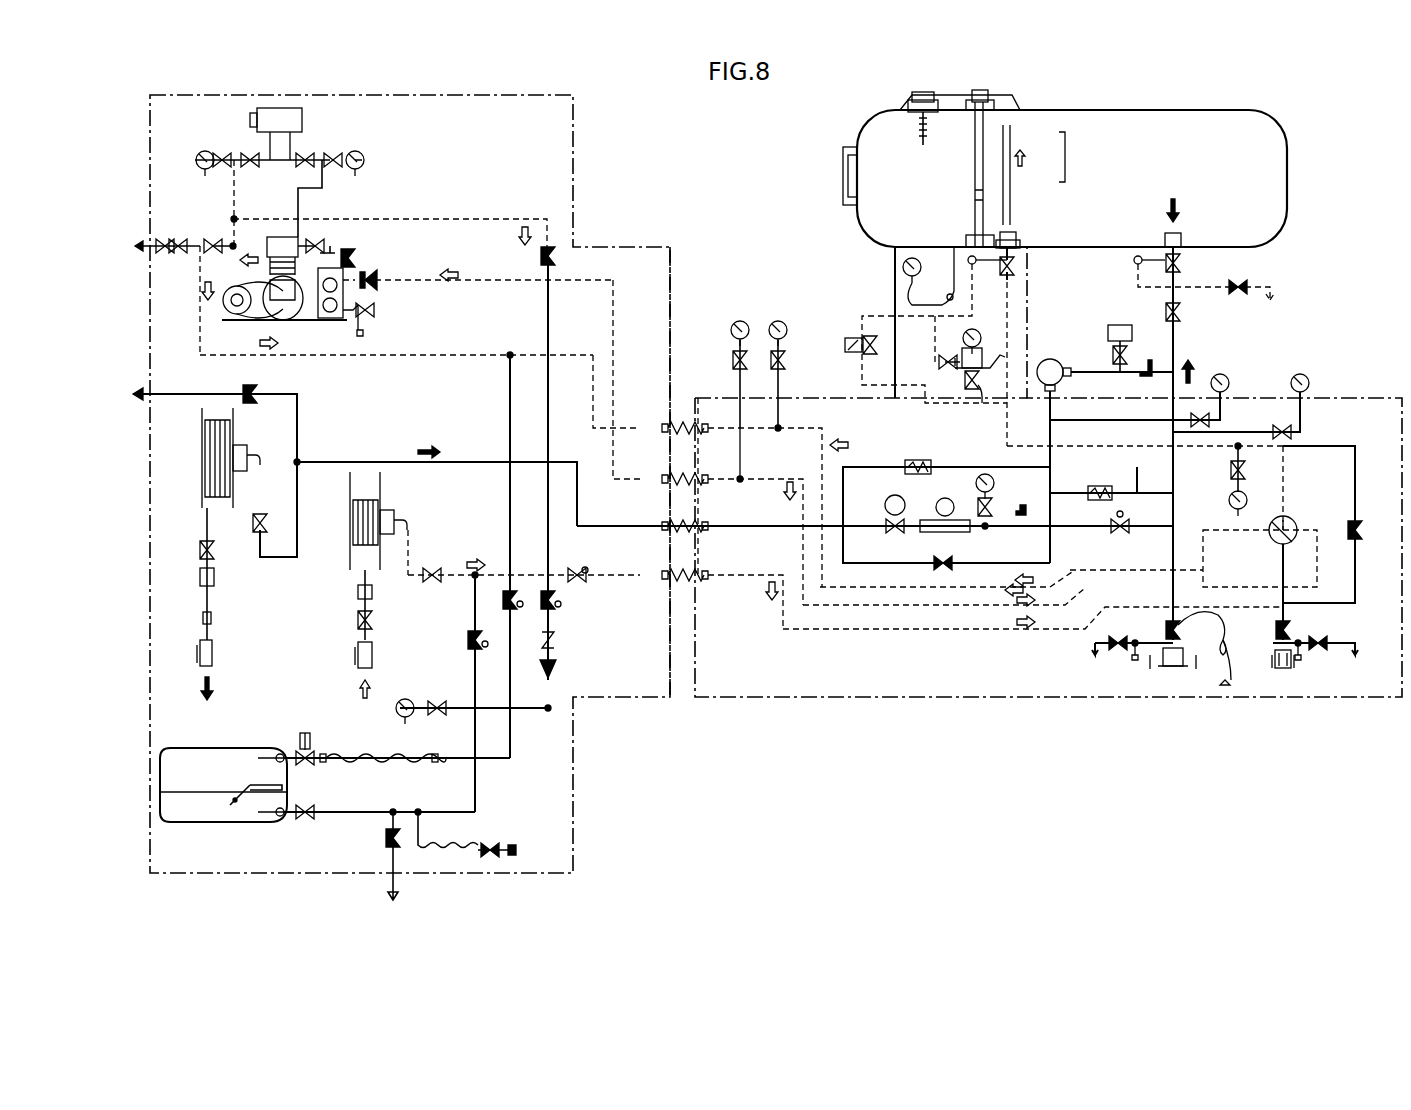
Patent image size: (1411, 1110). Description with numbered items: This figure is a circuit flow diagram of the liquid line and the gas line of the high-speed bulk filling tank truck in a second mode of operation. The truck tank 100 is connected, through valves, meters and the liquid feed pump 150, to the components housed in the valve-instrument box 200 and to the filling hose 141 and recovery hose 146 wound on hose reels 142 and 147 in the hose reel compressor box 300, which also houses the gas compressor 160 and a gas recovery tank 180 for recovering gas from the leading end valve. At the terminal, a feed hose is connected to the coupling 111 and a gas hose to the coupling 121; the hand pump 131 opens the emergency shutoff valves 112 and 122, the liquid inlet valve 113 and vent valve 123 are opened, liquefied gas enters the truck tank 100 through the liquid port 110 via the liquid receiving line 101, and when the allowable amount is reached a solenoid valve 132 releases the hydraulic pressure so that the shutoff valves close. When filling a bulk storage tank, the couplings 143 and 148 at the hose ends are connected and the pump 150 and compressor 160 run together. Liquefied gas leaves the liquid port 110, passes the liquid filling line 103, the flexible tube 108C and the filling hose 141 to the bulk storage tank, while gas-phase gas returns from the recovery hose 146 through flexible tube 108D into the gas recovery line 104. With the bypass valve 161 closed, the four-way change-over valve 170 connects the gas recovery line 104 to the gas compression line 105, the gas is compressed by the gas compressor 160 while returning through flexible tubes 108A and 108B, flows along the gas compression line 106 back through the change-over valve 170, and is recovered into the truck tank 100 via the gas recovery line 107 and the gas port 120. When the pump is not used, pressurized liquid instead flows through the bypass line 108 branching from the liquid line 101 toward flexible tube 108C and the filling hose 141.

The truck tank 100 is at (1145, 108).
The liquid port 110 is at (1183, 235).
The emergency shutoff valve 112 is at (1182, 262).
The gas port 120 is at (1020, 235).
The emergency shutoff valve 122 is at (1022, 258).
The solenoid valve 132 is at (860, 334).
The hand pump 131 is at (970, 373).
The liquid feed pump 150 is at (1055, 359).
The liquid filling line 103 is at (1075, 376).
The liquid receiving line 101 is at (1158, 492).
The bypass line 108 is at (1067, 534).
The flexible tube 108A is at (680, 422).
The flexible tube 108B is at (675, 476).
The flexible tube 108C is at (675, 524).
The flexible tube 108D is at (675, 580).
The gas recovery line 107 is at (1193, 450).
The four-way change-over valve 170 is at (1288, 524).
The bypass valve 161 is at (1360, 524).
The liquid inlet valve 113 is at (1166, 633).
The coupling 111 is at (1168, 673).
The vent valve 123 is at (1293, 632).
The coupling 121 is at (1282, 666).
The gas recovery line 104 is at (978, 630).
The gas compression line 105 is at (1058, 620).
The gas compression line 106 is at (930, 608).
The valve-instrument box 200 is at (945, 697).
The hose reel compressor box 300 is at (573, 788).
The gas compressor 160 is at (282, 305).
The hose reel 142 is at (234, 432).
The filling hose 141 is at (215, 560).
The coupling 143 is at (215, 650).
The hose reel 147 is at (383, 498).
The recovery hose 146 is at (358, 588).
The coupling 148 is at (374, 657).
The gas recovery tank 180 is at (212, 823).